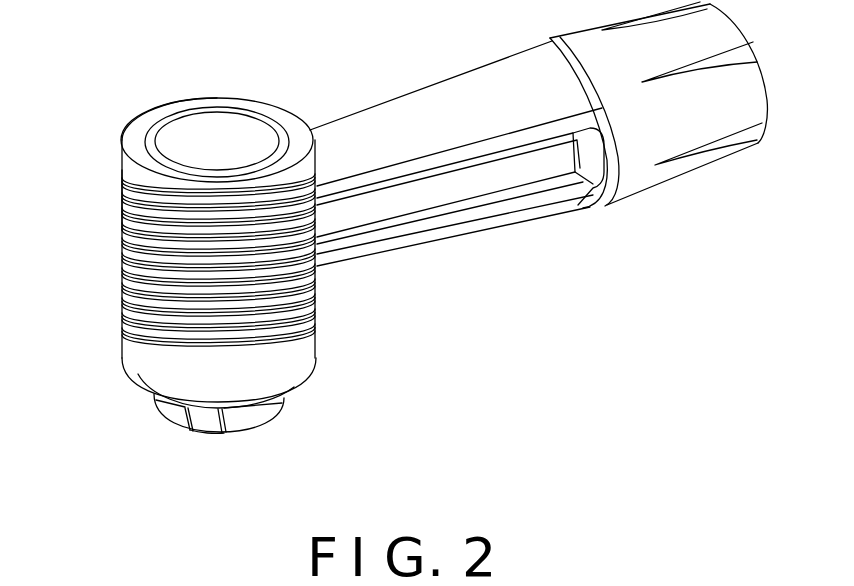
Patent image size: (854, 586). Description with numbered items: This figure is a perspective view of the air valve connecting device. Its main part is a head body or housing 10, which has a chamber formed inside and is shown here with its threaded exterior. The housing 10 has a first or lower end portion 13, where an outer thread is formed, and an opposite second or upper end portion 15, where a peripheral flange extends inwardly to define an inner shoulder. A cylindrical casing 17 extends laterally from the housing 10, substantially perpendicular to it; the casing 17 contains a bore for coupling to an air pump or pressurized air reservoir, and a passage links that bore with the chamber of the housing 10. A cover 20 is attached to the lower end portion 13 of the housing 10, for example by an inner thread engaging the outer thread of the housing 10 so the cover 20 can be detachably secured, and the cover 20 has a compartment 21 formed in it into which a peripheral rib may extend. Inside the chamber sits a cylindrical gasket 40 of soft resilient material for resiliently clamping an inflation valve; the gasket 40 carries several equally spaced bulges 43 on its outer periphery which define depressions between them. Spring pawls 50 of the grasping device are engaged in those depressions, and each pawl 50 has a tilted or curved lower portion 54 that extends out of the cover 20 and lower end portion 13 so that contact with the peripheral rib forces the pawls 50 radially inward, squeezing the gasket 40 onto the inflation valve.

The head body or housing 10 is at (120, 200).
The first or lower end portion 13 is at (120, 277).
The second or upper end portion 15 is at (127, 142).
The cylindrical casing 17 is at (424, 124).
The cover 20 is at (222, 221).
The compartment 21 is at (212, 133).
The gasket 40 is at (201, 441).
The bulges 43 is at (198, 421).
The pawls 50 is at (165, 410).
The tilted or curved lower portion 54 is at (253, 415).